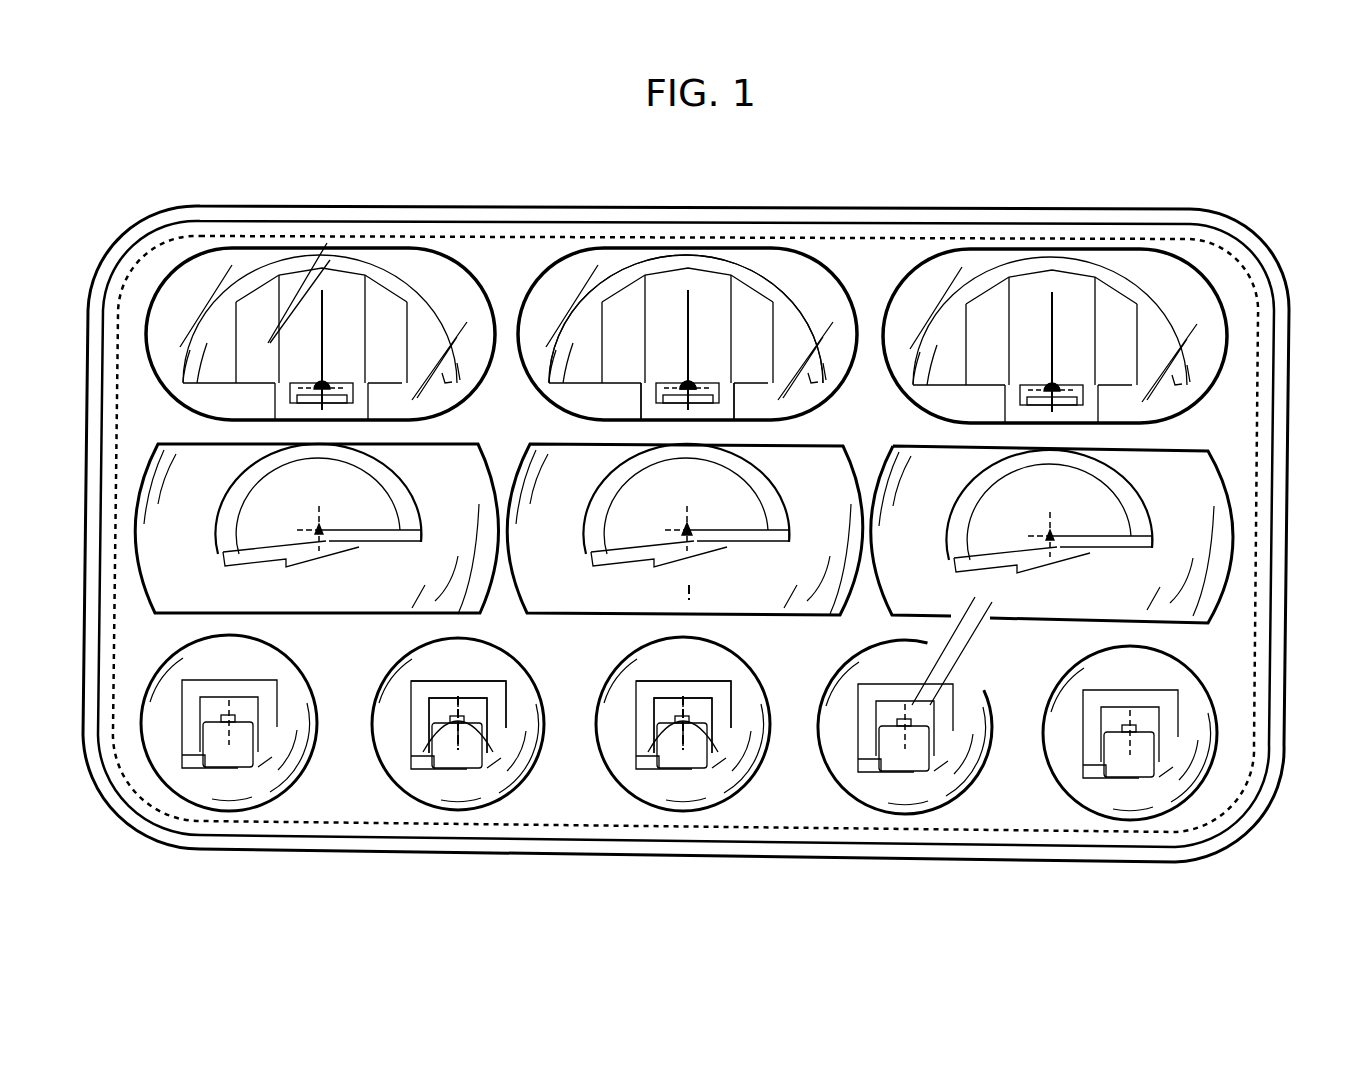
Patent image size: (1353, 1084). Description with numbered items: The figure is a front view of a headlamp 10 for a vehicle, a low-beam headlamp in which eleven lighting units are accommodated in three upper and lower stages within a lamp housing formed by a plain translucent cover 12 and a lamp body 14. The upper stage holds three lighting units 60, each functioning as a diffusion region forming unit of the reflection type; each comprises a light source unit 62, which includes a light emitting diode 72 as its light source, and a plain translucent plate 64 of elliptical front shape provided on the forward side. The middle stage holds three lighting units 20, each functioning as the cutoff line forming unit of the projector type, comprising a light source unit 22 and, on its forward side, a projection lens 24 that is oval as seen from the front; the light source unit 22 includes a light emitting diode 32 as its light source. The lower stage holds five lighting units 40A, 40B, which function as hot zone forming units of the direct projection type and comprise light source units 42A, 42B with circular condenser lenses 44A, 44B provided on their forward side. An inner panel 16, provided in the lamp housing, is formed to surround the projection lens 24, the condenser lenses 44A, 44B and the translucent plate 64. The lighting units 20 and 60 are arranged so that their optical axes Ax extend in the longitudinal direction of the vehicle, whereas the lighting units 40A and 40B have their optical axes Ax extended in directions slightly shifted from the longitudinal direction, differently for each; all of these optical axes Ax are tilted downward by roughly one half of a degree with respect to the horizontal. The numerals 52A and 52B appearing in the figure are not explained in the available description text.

The headlamp 10 is at (710, 488).
The translucent cover 12 is at (748, 222).
The lamp body 14 is at (675, 206).
The inner panel 16 is at (1225, 397).
The lighting unit 20 is at (736, 542).
The light source unit 22 is at (628, 566).
The projection lens 24 is at (813, 512).
The light emitting diode 32 is at (690, 530).
The lighting unit 40A is at (745, 750).
The lighting unit 40B is at (686, 761).
The light source unit 42A is at (630, 743).
The light source unit 42B is at (403, 739).
The condenser lens 44A is at (697, 664).
The condenser lens 44B is at (460, 664).
The light source 52A is at (647, 752).
The light source 52B is at (428, 750).
The lighting unit 60 is at (706, 330).
The light source unit 62 is at (611, 396).
The translucent plate 64 is at (812, 292).
The light emitting diode 72 is at (688, 388).
The optical axis Ax is at (692, 388).